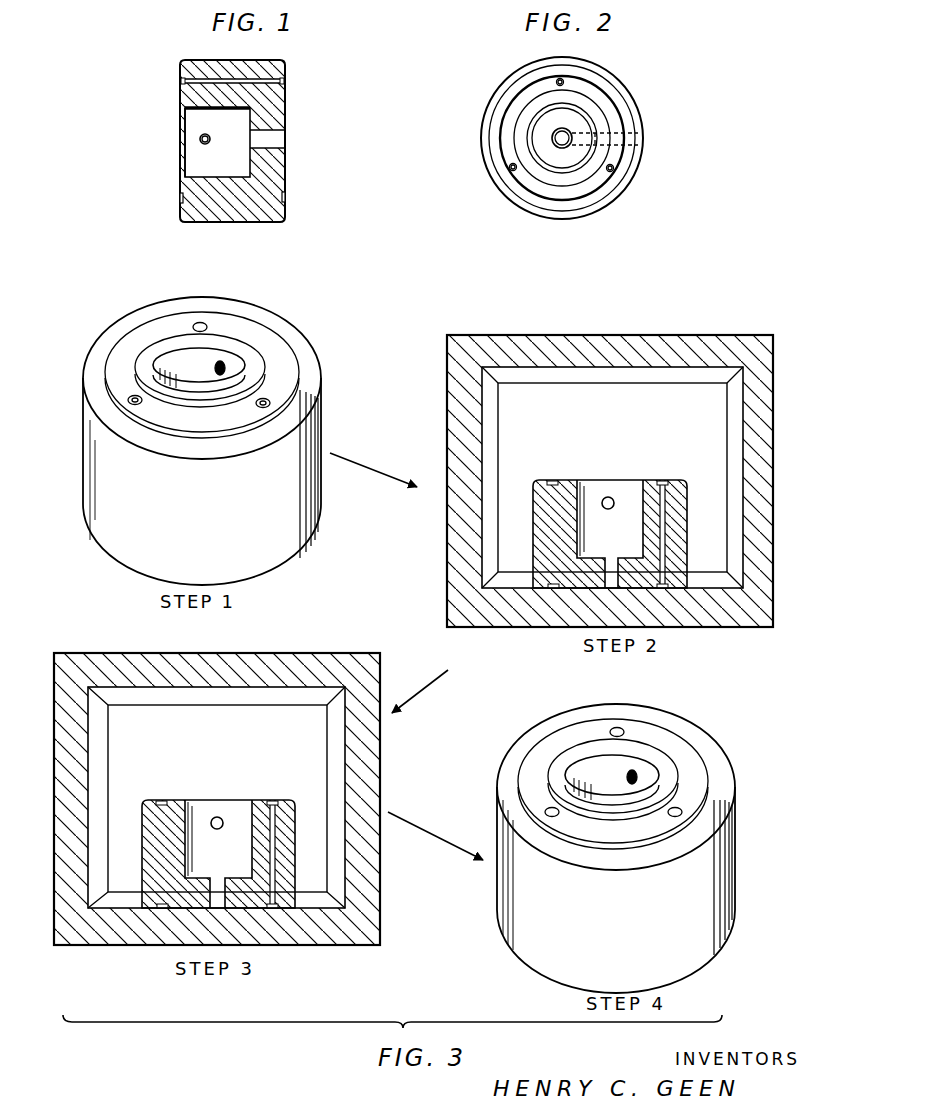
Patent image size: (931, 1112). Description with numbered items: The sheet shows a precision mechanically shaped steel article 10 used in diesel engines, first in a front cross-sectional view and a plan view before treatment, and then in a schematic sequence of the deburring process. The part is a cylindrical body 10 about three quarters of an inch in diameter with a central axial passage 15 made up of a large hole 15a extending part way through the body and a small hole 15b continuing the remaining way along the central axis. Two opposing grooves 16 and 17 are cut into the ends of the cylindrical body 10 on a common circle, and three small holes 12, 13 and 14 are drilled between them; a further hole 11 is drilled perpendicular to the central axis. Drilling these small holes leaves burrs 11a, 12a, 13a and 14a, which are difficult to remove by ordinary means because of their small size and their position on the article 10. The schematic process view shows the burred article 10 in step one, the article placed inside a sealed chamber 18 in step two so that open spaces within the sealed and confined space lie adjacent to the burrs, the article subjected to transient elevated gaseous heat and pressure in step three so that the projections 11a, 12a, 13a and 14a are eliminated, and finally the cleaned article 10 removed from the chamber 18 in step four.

In FIG. 1, the cylindrical body 10 is at (232, 141).
In FIG. 2, the cylindrical body 10 is at (572, 220).
In FIG. 3, the cylindrical body 10 is at (322, 487).
In FIG. 1, the hole 11 is at (200, 138).
In FIG. 2, the hole 11 is at (638, 137).
In FIG. 3, the hole 11 is at (227, 370).
In FIG. 1, the burr 11a is at (202, 145).
In FIG. 2, the burr 11a is at (593, 142).
In FIG. 3, the burr 11a is at (233, 367).
In FIG. 1, the hole 12 is at (267, 78).
In FIG. 2, the hole 12 is at (562, 82).
In FIG. 3, the hole 12 is at (207, 322).
In FIG. 1, the burr 12a is at (181, 83).
In FIG. 2, the burr 12a is at (563, 87).
In FIG. 3, the burr 12a is at (197, 323).
In FIG. 2, the hole 13 is at (512, 167).
In FIG. 3, the hole 13 is at (128, 400).
In FIG. 2, the burr 13a is at (518, 177).
In FIG. 3, the burr 13a is at (130, 404).
In FIG. 2, the hole 14 is at (613, 167).
In FIG. 3, the hole 14 is at (270, 403).
In FIG. 2, the burr 14a is at (605, 180).
In FIG. 3, the burr 14a is at (270, 401).
In FIG. 2, the central axial hole 15 is at (570, 137).
In FIG. 1, the large hole 15a is at (182, 163).
In FIG. 1, the small hole 15b is at (273, 143).
In FIG. 1, the groove 16 is at (180, 80).
In FIG. 2, the groove 16 is at (543, 193).
In FIG. 3, the groove 16 is at (153, 413).
In FIG. 1, the groove 17 is at (286, 82).
In FIG. 3, the sealed chamber 18 is at (683, 617).